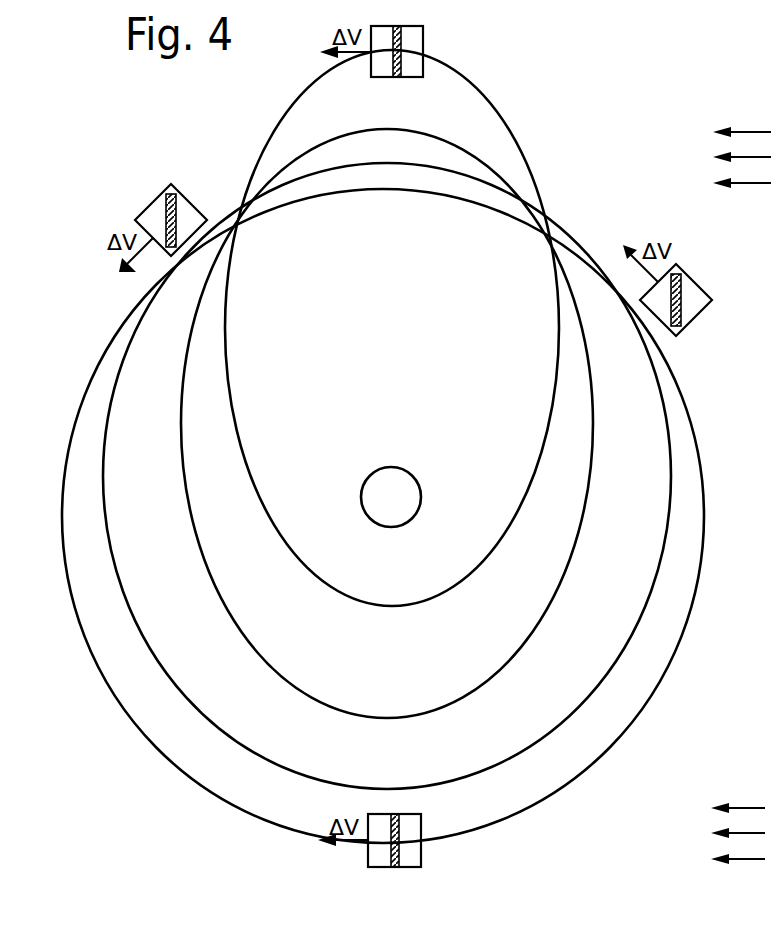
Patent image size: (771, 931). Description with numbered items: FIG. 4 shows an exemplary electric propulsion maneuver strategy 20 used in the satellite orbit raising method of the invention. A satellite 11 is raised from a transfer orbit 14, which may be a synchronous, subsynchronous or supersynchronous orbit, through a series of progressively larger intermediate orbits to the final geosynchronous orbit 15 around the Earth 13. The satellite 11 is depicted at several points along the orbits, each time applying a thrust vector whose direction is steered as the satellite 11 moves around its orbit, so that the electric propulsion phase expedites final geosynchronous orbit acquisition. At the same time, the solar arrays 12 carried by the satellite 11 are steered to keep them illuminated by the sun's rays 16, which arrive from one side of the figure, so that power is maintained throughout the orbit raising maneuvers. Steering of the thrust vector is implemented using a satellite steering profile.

The satellite 11 is at (423, 33).
The solar arrays 12 is at (401, 68).
The Earth 13 is at (398, 467).
The transfer orbit 14 is at (492, 549).
The geosynchronous orbit 15 is at (590, 766).
The sun's rays 16 is at (732, 156).
The orbit raising maneuver scheme 20 is at (608, 89).